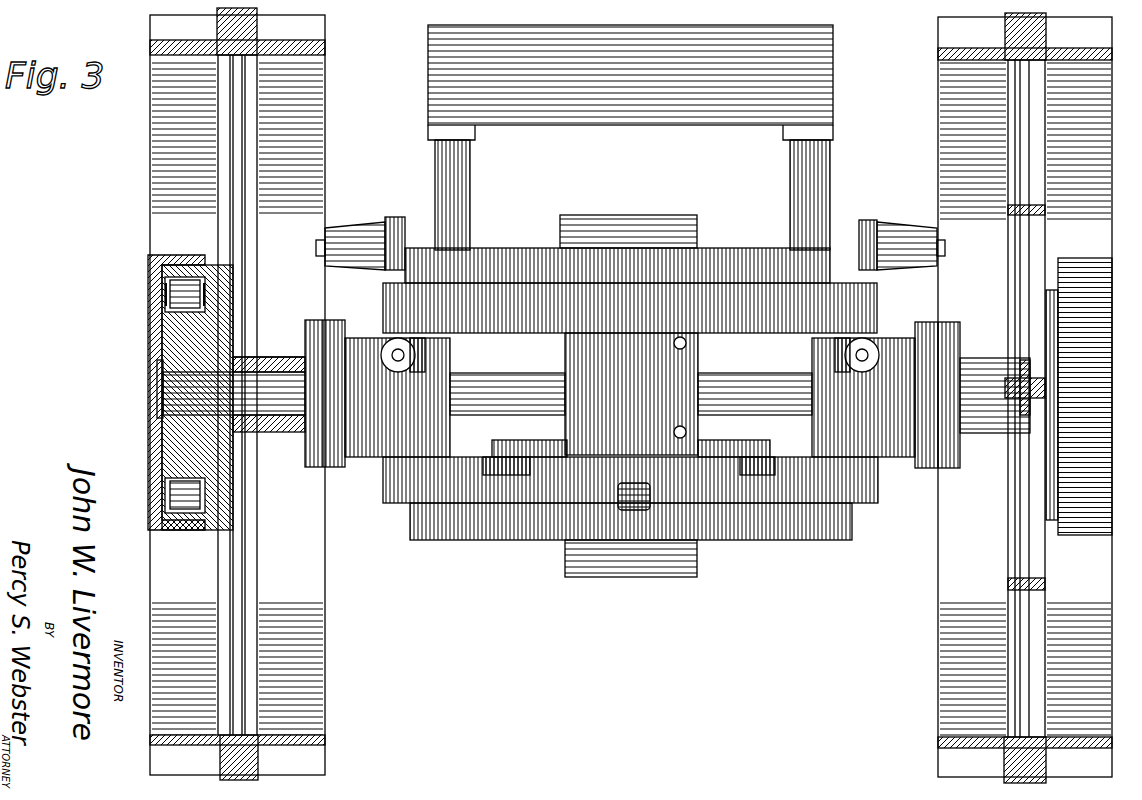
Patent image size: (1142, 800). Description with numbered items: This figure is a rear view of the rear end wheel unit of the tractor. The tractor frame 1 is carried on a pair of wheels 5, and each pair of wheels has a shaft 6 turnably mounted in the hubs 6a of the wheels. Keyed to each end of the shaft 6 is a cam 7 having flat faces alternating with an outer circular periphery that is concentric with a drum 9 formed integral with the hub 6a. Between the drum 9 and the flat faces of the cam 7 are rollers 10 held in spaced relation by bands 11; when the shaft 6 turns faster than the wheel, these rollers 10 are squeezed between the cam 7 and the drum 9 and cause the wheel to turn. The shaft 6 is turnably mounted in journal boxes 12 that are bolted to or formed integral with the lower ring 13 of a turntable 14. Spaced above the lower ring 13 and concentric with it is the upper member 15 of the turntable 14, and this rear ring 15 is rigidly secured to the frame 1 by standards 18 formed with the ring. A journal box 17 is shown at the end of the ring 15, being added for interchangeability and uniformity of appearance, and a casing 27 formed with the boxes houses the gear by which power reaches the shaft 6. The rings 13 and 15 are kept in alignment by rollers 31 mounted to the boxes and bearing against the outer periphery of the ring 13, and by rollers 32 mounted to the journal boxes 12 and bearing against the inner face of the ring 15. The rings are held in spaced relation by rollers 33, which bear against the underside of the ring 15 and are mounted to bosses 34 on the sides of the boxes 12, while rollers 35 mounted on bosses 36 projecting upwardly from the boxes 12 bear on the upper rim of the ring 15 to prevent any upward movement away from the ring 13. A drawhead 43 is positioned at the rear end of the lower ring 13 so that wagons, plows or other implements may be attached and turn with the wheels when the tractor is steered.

The frame 1 is at (637, 100).
The wheels 5 is at (327, 46).
The shaft 6 is at (275, 405).
The hub 6a is at (273, 357).
The cam 7 is at (205, 256).
The drum 9 is at (150, 262).
The rollers 10 is at (165, 284).
The bands 11 is at (165, 303).
The journal boxes 12 is at (380, 433).
The lower ring 13 is at (425, 540).
The turntable 14 is at (500, 335).
The upper member 15 is at (517, 280).
The journal box 17 is at (672, 372).
The standards 18 is at (470, 198).
The casing 27 is at (650, 232).
The rollers 31 is at (506, 462).
The rollers 32 is at (400, 318).
The rollers 33 is at (430, 352).
The bosses 34 is at (905, 348).
The rollers 35 is at (395, 222).
The bosses 36 is at (922, 230).
The drawhead 43 is at (645, 500).